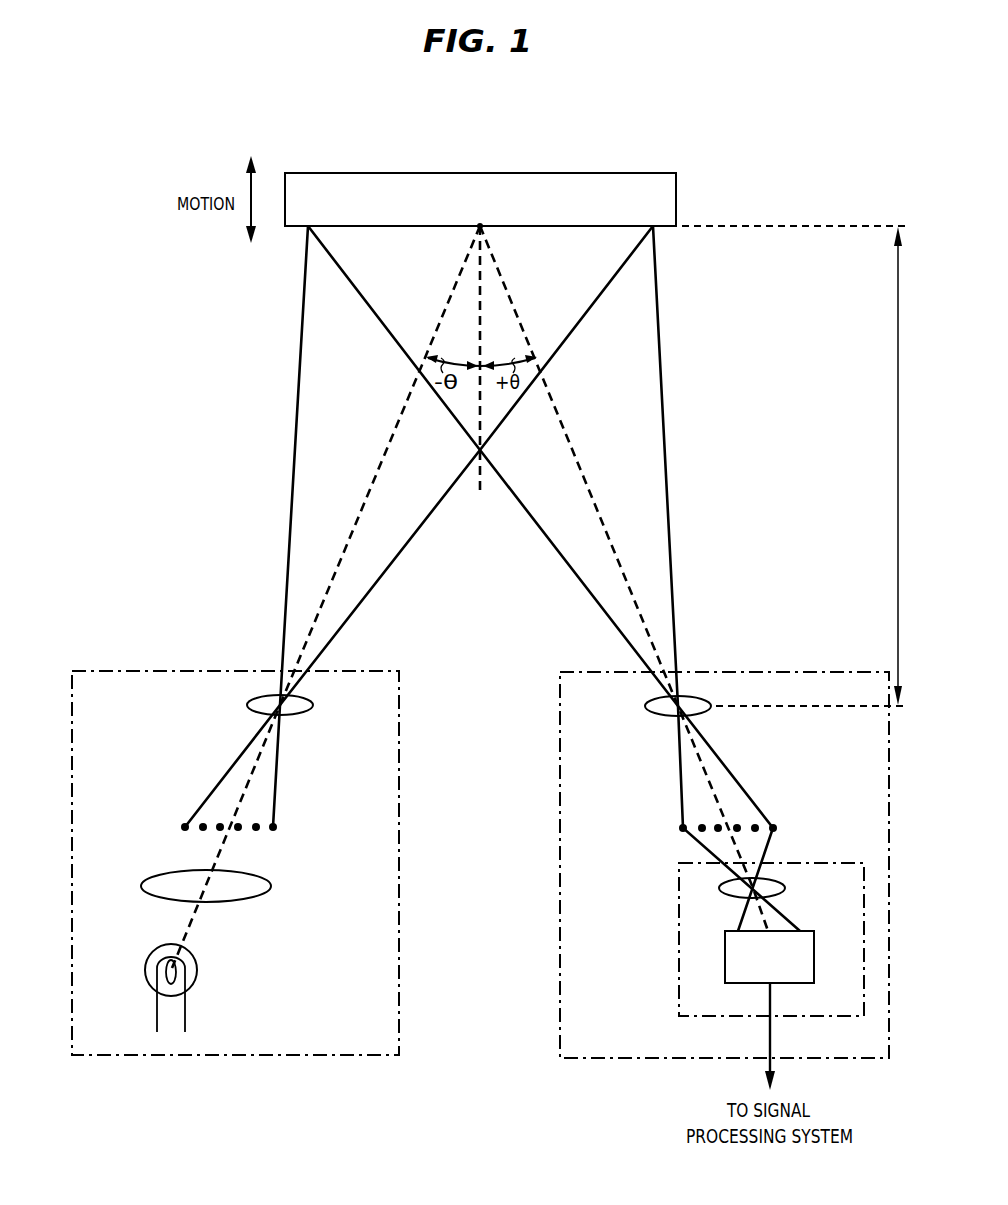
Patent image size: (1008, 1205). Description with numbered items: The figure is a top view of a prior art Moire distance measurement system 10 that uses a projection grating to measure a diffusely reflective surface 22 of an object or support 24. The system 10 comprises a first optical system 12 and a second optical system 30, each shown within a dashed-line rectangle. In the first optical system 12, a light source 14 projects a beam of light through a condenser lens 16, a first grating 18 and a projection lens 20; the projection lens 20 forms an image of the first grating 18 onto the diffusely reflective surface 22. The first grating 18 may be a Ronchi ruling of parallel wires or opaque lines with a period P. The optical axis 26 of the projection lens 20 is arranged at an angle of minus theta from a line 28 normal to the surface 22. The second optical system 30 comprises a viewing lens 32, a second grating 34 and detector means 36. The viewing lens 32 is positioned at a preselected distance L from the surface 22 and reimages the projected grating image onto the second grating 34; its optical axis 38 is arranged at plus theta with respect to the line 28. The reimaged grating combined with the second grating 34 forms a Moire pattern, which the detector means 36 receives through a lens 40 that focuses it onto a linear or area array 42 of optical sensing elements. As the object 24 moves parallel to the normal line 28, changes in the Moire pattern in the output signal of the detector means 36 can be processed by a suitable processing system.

The Moire distance measurement system 10 is at (633, 132).
The first optical system 12 is at (112, 668).
The light source 14 is at (197, 968).
The condenser lens 16 is at (271, 886).
The first grating 18 is at (277, 827).
The projection lens 20 is at (248, 705).
The diffusely reflective surface 22 is at (412, 226).
The object or support 24 is at (372, 173).
The optical axis of the projection lens 26 is at (380, 457).
The normal line 28 is at (490, 282).
The second optical system 30 is at (820, 672).
The viewing lens 32 is at (645, 706).
The second grating 34 is at (775, 827).
The detector means 36 is at (679, 880).
The optical axis of the viewing lens 38 is at (584, 468).
The lens 40 is at (720, 888).
The array of optical sensing elements 42 is at (725, 948).